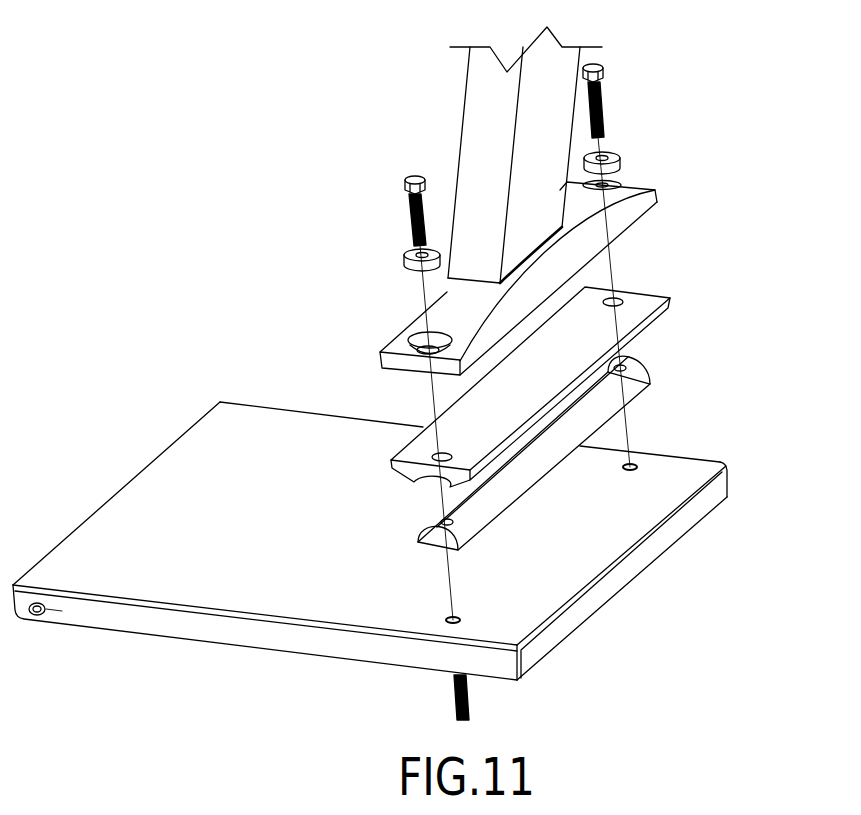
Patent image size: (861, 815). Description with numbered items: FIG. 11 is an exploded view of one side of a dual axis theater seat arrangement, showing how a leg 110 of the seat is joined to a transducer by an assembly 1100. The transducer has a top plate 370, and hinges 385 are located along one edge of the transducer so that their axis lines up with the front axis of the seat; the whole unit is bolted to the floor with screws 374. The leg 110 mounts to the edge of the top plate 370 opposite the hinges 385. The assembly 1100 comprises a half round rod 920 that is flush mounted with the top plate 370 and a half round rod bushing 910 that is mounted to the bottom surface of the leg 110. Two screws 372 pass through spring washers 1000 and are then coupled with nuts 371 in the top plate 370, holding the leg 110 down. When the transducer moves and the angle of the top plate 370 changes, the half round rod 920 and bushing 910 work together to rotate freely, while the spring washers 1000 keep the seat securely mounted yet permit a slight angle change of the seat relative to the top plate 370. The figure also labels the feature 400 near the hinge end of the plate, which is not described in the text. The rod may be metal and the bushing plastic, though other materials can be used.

The leg 110 is at (483, 102).
The top plate 370 is at (267, 437).
The nut 371 is at (636, 470).
The screw 372 is at (413, 175).
The screw 374 is at (470, 702).
The hinge 385 is at (35, 617).
The cable 400 is at (50, 610).
The half round rod bushing 910 is at (630, 314).
The half round rod 920 is at (632, 387).
The spring washer 1000 is at (415, 266).
The assembly 1100 is at (710, 27).